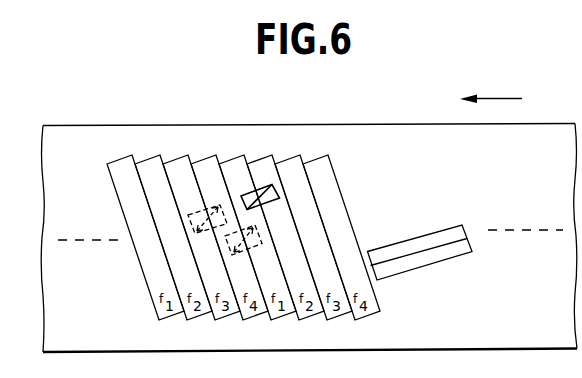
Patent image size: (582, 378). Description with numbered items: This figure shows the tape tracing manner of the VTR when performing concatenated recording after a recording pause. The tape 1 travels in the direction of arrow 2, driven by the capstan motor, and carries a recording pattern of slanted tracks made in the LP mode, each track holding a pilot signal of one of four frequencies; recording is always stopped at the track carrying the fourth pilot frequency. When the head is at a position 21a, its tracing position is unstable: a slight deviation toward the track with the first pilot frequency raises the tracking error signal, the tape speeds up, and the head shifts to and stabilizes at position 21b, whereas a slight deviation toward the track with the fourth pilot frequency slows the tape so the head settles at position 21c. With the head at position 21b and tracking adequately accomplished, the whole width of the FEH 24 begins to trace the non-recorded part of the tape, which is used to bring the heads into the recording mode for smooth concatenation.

The tape 1 is at (547, 126).
The arrow 2 is at (490, 98).
The head position 21a is at (230, 230).
The head position 21b is at (260, 188).
The head position 21c is at (191, 212).
The FEH 24 is at (416, 240).